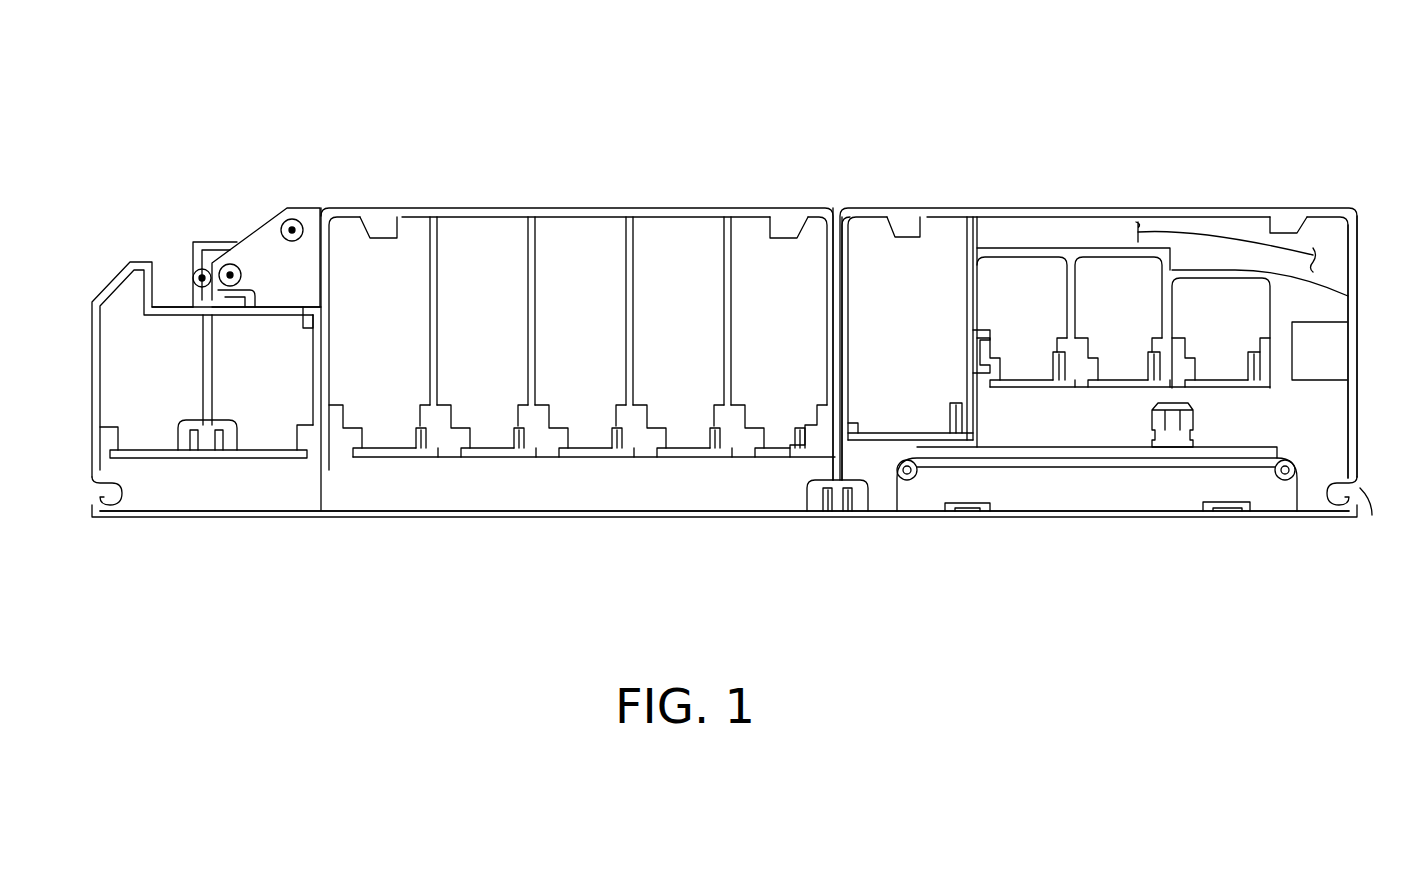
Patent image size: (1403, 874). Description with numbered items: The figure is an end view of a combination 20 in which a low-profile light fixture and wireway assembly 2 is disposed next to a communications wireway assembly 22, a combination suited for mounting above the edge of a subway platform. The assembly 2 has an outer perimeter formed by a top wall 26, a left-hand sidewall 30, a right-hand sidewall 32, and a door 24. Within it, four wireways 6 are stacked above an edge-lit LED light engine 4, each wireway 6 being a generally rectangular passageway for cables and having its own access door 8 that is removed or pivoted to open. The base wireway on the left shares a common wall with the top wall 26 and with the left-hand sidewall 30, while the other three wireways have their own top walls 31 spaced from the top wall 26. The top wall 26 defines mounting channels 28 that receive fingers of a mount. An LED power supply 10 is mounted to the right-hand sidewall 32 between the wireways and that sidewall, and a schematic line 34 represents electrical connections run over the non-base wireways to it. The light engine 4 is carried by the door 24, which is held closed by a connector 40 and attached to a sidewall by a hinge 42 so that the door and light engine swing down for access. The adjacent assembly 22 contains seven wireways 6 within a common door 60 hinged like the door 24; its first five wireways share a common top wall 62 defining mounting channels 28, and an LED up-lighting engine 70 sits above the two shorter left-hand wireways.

The light fixture and wireway assembly 2 is at (1360, 562).
The light engine 4 is at (1090, 490).
The wireway 6 is at (128, 370).
The access door 8 is at (235, 460).
The LED power supply 10 is at (1340, 360).
The combination 20 is at (950, 100).
The communications wireway assembly 22 is at (835, 562).
The door 24 is at (88, 492).
The top wall 26 is at (1120, 210).
The mounting channel 28 is at (372, 212).
The left-hand sidewall 30 is at (845, 325).
The top wall of wireway 31 is at (1102, 248).
The right-hand sidewall 32 is at (1360, 275).
The schematic line 34 is at (1228, 232).
The connector 40 is at (192, 432).
The hinge 42 is at (1362, 492).
The common door 60 is at (455, 517).
The common top wall 62 is at (603, 210).
The LED up-lighting engine 70 is at (250, 241).